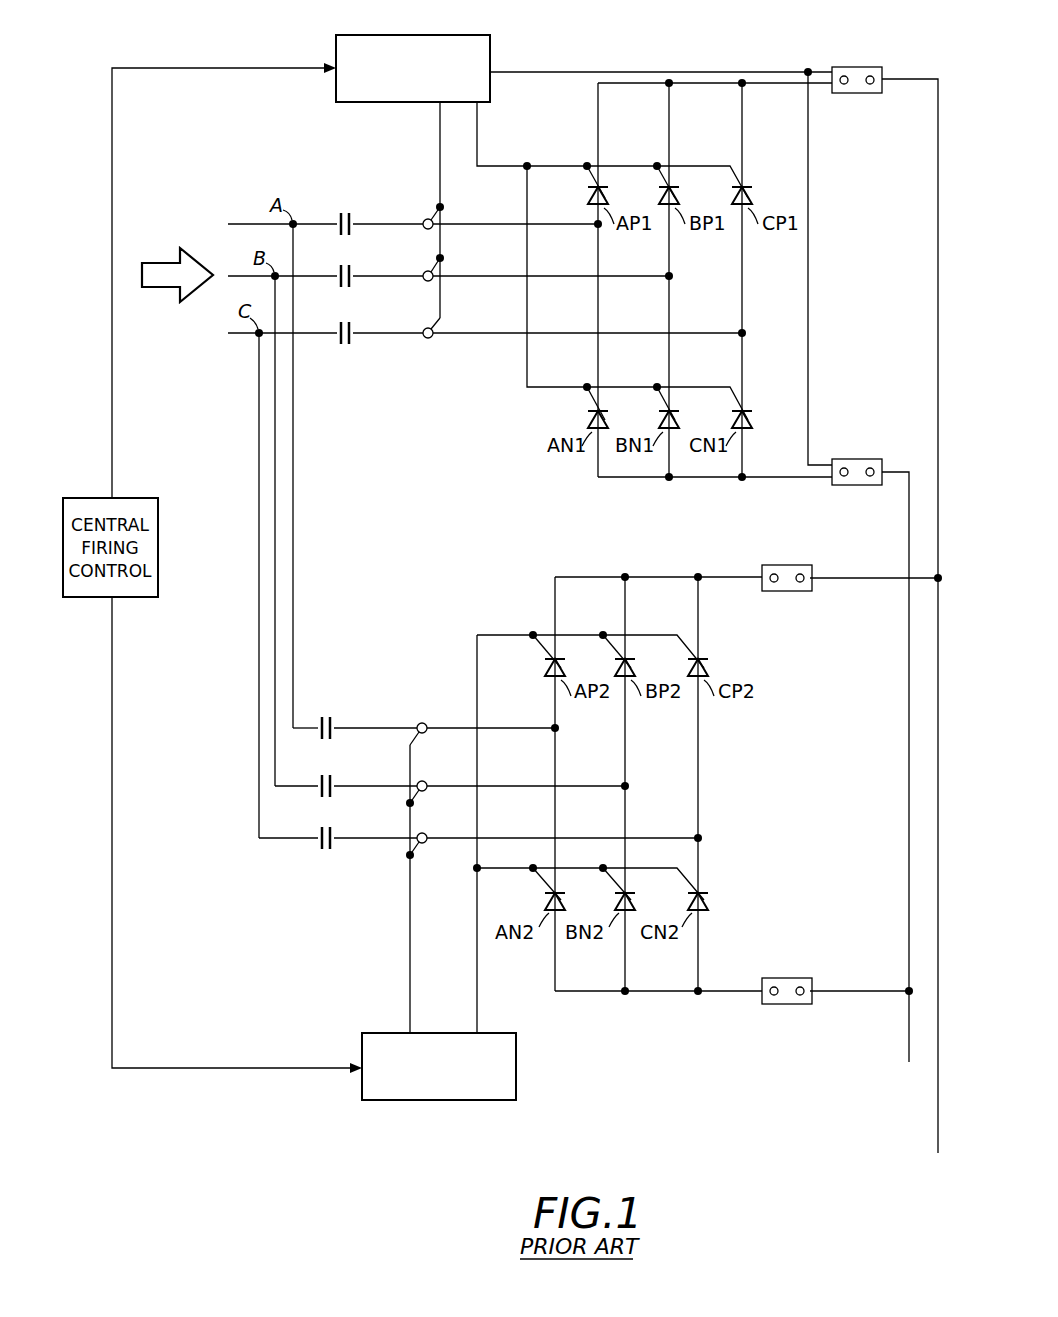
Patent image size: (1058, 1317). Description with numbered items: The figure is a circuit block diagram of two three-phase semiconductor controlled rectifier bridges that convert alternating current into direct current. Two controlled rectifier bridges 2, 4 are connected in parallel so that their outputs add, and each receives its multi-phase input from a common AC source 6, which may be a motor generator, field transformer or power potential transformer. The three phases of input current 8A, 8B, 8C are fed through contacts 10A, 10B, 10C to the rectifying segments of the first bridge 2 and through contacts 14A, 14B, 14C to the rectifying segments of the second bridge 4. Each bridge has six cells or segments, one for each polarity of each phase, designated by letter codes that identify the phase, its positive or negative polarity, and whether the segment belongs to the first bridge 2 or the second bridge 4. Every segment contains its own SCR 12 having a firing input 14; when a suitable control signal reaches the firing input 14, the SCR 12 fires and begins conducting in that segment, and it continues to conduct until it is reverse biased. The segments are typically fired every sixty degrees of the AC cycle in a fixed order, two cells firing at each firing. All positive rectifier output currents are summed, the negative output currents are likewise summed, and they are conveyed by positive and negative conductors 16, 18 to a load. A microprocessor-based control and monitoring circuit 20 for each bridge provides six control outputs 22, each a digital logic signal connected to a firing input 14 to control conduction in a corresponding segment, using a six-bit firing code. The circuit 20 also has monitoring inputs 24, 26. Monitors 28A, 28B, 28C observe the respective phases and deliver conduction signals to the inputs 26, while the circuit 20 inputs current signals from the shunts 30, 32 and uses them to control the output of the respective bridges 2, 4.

The first controlled rectifier bridge 2 is at (884, 262).
The second controlled rectifier bridge 4 is at (794, 810).
The common AC source 6 is at (170, 266).
The phase A input current 8A is at (237, 222).
The phase B input current 8B is at (237, 274).
The phase C input current 8C is at (237, 335).
The phase A contact 10A is at (340, 216).
The phase B contact 10B is at (350, 266).
The phase C contact 10C is at (351, 342).
The SCR 12 is at (609, 200).
The firing input 14 is at (590, 180).
The phase A contact 14A is at (325, 718).
The phase B contact 14B is at (325, 776).
The phase C contact 14C is at (325, 828).
The positive conductor 16 is at (938, 1117).
The negative conductor 18 is at (909, 1032).
The control and monitoring circuit 20 is at (405, 35).
The control outputs 22 is at (479, 104).
The monitoring input 24 is at (492, 70).
The monitoring inputs 26 is at (438, 104).
The phase A monitor 28A is at (425, 218).
The phase B monitor 28B is at (425, 282).
The phase C monitor 28C is at (432, 338).
The shunt 30 is at (850, 67).
The shunt 32 is at (850, 459).